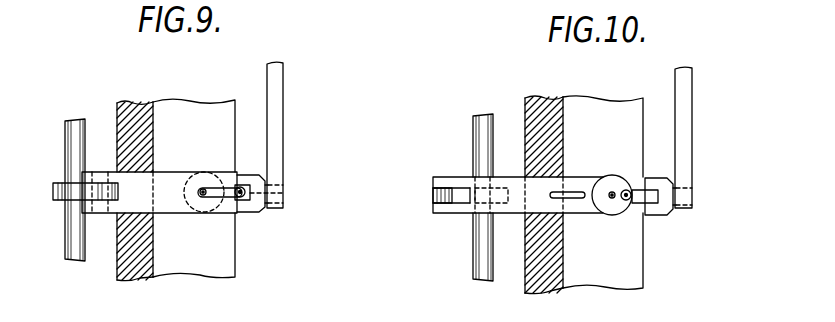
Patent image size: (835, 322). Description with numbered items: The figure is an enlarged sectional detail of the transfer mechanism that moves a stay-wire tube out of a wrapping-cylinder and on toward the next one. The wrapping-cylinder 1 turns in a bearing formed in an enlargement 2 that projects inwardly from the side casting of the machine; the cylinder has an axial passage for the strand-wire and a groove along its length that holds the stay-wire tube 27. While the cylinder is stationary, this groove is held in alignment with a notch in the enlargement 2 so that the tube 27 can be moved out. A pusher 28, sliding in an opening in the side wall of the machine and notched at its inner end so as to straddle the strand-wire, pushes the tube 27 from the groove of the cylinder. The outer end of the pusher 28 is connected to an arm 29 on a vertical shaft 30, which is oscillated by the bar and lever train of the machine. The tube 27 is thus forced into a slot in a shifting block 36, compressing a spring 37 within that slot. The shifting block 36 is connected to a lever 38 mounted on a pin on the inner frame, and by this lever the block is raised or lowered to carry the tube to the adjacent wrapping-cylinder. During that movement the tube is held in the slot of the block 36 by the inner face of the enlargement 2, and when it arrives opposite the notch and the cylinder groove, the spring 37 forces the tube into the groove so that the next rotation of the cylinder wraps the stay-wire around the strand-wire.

In FIG. 9, the wrapping-cylinder 1 is at (190, 214).
In FIG. 10, the wrapping-cylinder 1 is at (611, 208).
In FIG. 9, the enlargement 2 is at (194, 188).
In FIG. 10, the enlargement 2 is at (603, 192).
In FIG. 9, the stay-wire tube 27 is at (242, 187).
In FIG. 10, the stay-wire tube 27 is at (627, 189).
In FIG. 9, the pusher 28 is at (172, 182).
In FIG. 10, the pusher 28 is at (516, 177).
In FIG. 9, the arm 29 is at (53, 193).
In FIG. 10, the arm 29 is at (433, 194).
In FIG. 9, the vertical shaft 30 is at (68, 142).
In FIG. 10, the vertical shaft 30 is at (480, 141).
In FIG. 9, the shifting block 36 is at (252, 212).
In FIG. 10, the shifting block 36 is at (658, 215).
In FIG. 9, the spring 37 is at (283, 193).
In FIG. 10, the spring 37 is at (649, 191).
In FIG. 9, the lever 38 is at (277, 100).
In FIG. 10, the lever 38 is at (695, 135).